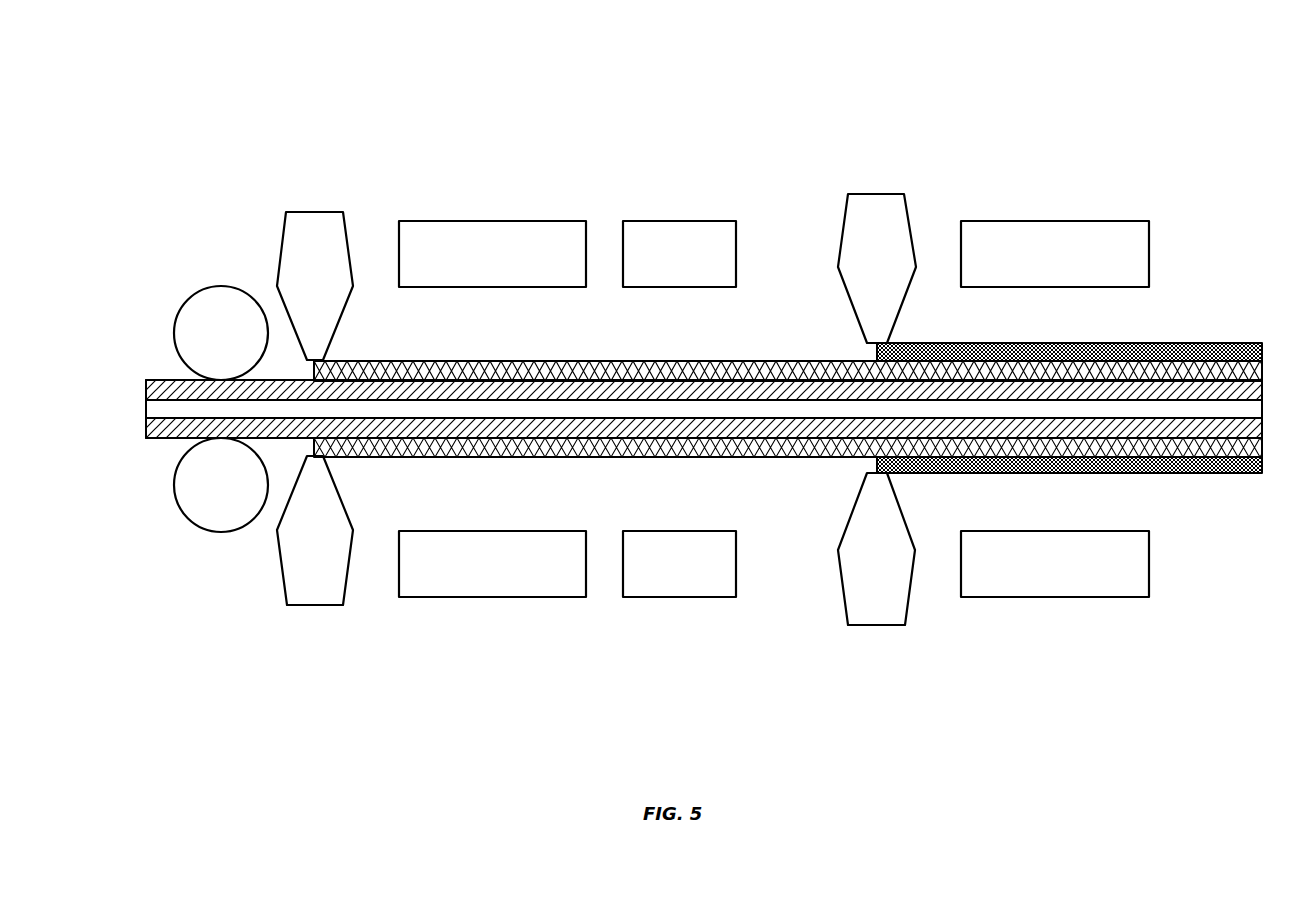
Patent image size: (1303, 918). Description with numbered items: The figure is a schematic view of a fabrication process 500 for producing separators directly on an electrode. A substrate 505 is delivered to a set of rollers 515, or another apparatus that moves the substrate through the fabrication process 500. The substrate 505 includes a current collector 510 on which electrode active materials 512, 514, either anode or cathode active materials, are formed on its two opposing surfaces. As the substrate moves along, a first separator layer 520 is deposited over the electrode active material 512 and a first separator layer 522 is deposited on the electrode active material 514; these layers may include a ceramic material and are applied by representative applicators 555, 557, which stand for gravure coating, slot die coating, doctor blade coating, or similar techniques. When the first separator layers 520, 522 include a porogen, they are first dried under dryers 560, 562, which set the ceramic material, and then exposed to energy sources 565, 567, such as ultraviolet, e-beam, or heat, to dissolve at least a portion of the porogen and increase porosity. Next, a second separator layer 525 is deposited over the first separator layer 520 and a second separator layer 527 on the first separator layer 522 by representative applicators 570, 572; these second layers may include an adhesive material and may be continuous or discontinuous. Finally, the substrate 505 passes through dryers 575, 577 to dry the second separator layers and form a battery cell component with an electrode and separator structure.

The fabrication process 500 is at (226, 110).
The substrate 505 is at (167, 380).
The current collector 510 is at (146, 409).
The electrode active material 512 is at (146, 390).
The electrode active material 514 is at (177, 438).
The rollers 515 is at (207, 288).
The first separator layer 520 is at (405, 361).
The first separator layer 522 is at (472, 457).
The second separator layer 525 is at (1195, 343).
The second separator layer 527 is at (1185, 474).
The applicator 555 is at (318, 212).
The applicator 557 is at (318, 606).
The dryer 560 is at (485, 220).
The dryer 562 is at (475, 598).
The energy source 565 is at (668, 220).
The energy source 567 is at (670, 598).
The applicator 570 is at (875, 193).
The applicator 572 is at (878, 627).
The dryer 575 is at (1085, 220).
The dryer 577 is at (985, 598).